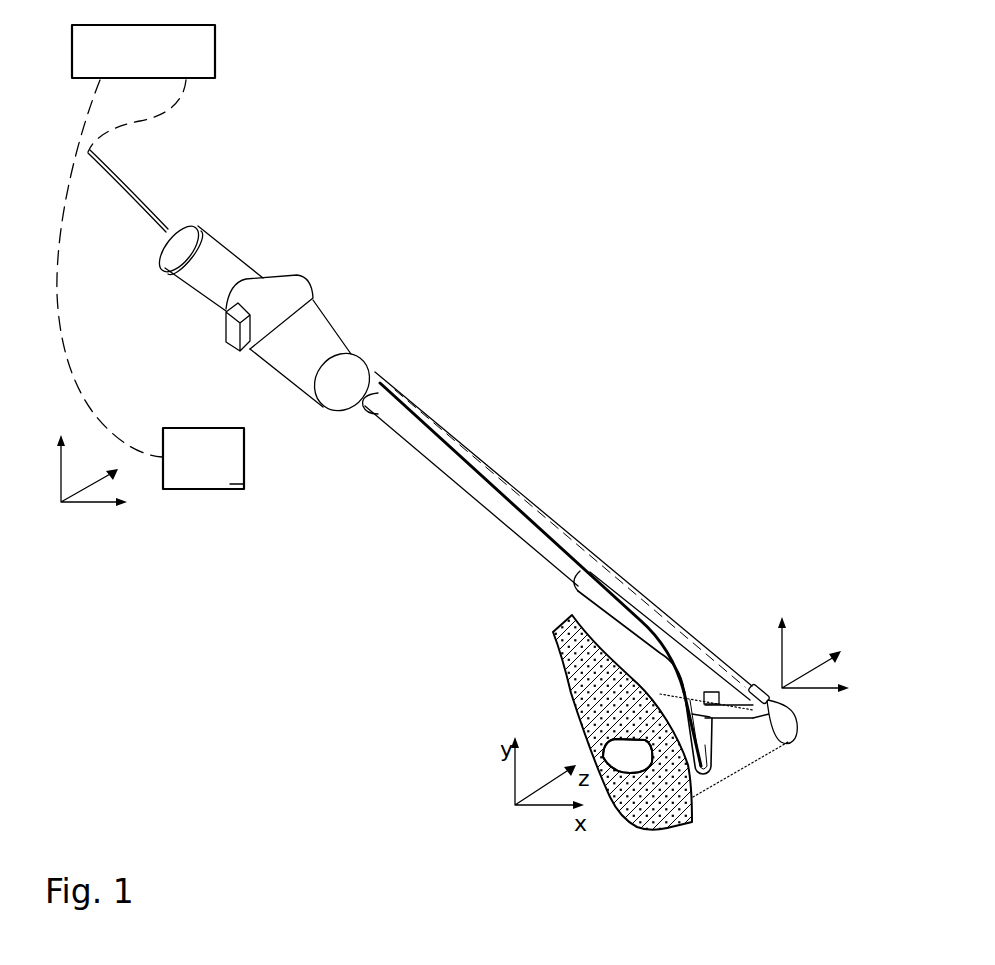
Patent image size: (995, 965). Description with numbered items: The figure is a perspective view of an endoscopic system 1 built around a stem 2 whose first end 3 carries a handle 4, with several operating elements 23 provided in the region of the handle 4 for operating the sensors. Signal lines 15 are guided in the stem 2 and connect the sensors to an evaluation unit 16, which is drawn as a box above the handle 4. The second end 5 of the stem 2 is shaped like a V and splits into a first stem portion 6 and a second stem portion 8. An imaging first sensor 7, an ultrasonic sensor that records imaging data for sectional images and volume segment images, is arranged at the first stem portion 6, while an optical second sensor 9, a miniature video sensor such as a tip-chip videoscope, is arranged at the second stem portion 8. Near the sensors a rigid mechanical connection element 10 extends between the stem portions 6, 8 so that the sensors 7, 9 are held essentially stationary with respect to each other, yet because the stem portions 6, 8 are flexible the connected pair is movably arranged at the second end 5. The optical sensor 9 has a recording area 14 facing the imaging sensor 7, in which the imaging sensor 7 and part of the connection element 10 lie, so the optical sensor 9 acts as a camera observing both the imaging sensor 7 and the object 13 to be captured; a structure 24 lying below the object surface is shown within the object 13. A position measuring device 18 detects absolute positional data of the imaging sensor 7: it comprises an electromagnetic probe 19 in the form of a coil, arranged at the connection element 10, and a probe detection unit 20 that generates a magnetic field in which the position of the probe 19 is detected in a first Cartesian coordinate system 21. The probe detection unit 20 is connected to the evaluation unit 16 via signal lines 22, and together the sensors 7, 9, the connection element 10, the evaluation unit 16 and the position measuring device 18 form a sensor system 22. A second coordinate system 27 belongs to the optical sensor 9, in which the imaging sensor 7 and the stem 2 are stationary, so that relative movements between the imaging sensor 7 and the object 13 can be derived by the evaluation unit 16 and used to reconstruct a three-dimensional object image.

The endoscopic system 1 is at (334, 267).
The stem 2 is at (546, 502).
The first end 3 is at (372, 393).
The handle 4 is at (215, 254).
The second end 5 is at (661, 640).
The first stem portion 6 is at (683, 673).
The imaging first sensor 7 is at (711, 760).
The second stem portion 8 is at (717, 668).
The optical second sensor 9 is at (800, 727).
The rigid mechanical connection element 10 is at (710, 717).
The object 13 is at (667, 823).
The recording area 14 is at (737, 768).
The signal lines 15 is at (477, 462).
The evaluation unit 16 is at (211, 51).
The position measuring device 18 is at (194, 496).
The electromagnetic probe 19 is at (713, 706).
The probe detection unit 20 is at (226, 484).
The first Cartesian coordinate system 21 is at (86, 512).
The signal lines 22 is at (224, 60).
The operating elements 23 is at (250, 302).
The structure 24 is at (615, 757).
The second coordinate system 27 is at (809, 634).